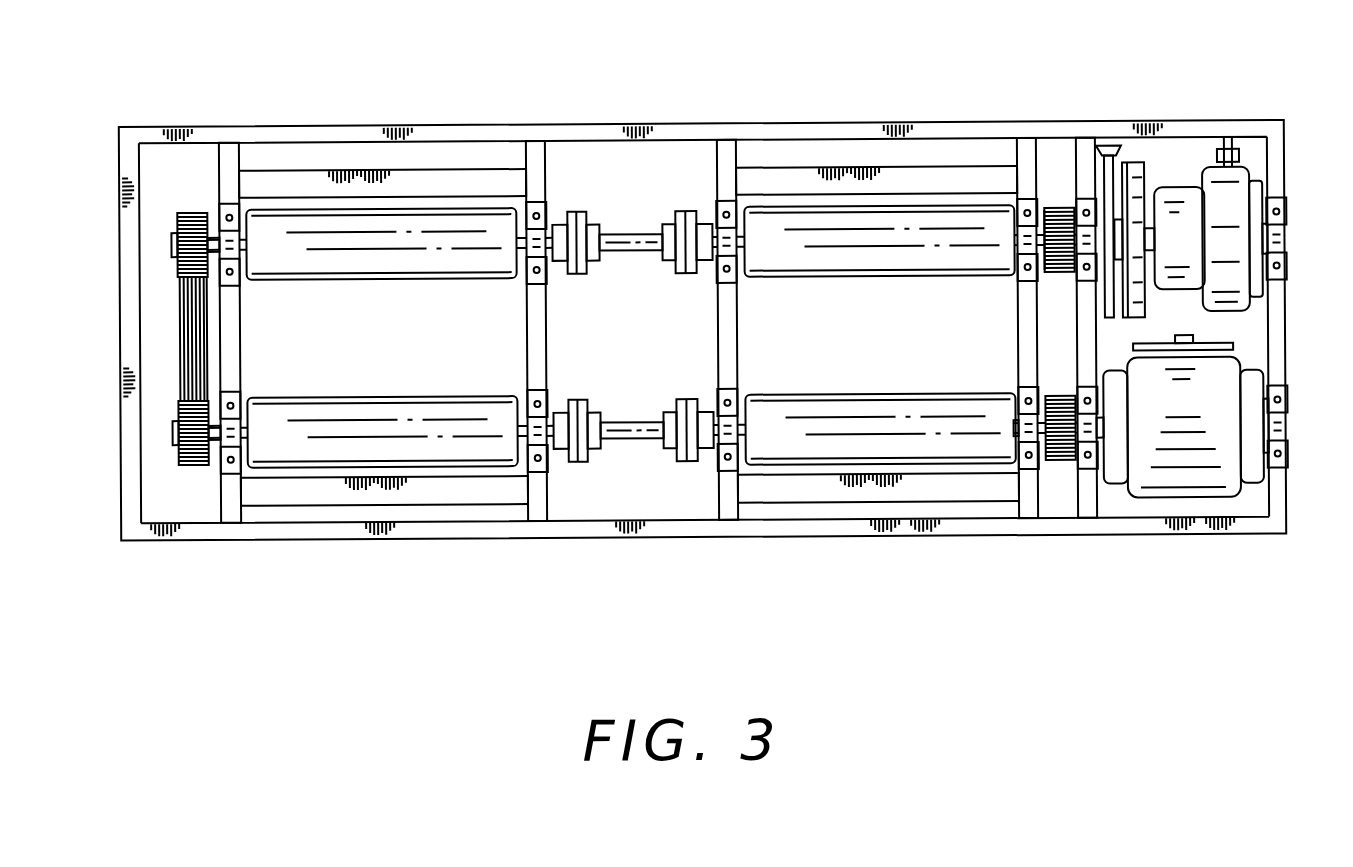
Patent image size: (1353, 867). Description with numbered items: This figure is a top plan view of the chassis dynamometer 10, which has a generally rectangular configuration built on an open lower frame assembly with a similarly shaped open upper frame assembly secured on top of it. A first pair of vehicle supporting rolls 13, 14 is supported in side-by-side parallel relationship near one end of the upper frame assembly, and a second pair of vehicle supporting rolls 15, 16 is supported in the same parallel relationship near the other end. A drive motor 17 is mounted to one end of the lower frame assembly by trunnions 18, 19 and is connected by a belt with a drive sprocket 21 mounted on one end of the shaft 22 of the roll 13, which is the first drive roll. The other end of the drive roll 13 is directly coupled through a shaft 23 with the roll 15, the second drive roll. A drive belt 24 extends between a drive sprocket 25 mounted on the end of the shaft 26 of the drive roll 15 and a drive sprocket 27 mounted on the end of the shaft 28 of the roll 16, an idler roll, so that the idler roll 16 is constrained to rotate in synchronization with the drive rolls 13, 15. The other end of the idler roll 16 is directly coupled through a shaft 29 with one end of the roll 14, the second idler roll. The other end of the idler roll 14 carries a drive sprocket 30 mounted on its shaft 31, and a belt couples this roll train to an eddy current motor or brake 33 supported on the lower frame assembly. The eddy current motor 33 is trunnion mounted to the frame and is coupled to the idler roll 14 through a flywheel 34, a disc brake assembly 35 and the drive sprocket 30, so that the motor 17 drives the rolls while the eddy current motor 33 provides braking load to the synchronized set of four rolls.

The chassis dynamometer 10 is at (846, 542).
The vehicle supporting roll 13 is at (940, 462).
The vehicle supporting roll 14 is at (798, 232).
The vehicle supporting roll 15 is at (357, 448).
The vehicle supporting roll 16 is at (362, 230).
The drive motor 17 is at (1182, 464).
The trunnion 18 is at (1088, 468).
The trunnion 19 is at (1285, 472).
The drive sprocket 21 is at (1052, 464).
The shaft 22 is at (1012, 430).
The shaft 23 is at (626, 426).
The drive belt 24 is at (183, 350).
The drive sprocket 25 is at (193, 462).
The shaft 26 is at (206, 462).
The drive sprocket 27 is at (188, 210).
The shaft 28 is at (214, 236).
The shaft 29 is at (628, 238).
The drive sprocket 30 is at (1060, 208).
The shaft 31 is at (1046, 208).
The eddy current motor 33 is at (1186, 190).
The flywheel 34 is at (1140, 166).
The disc brake assembly 35 is at (1090, 150).